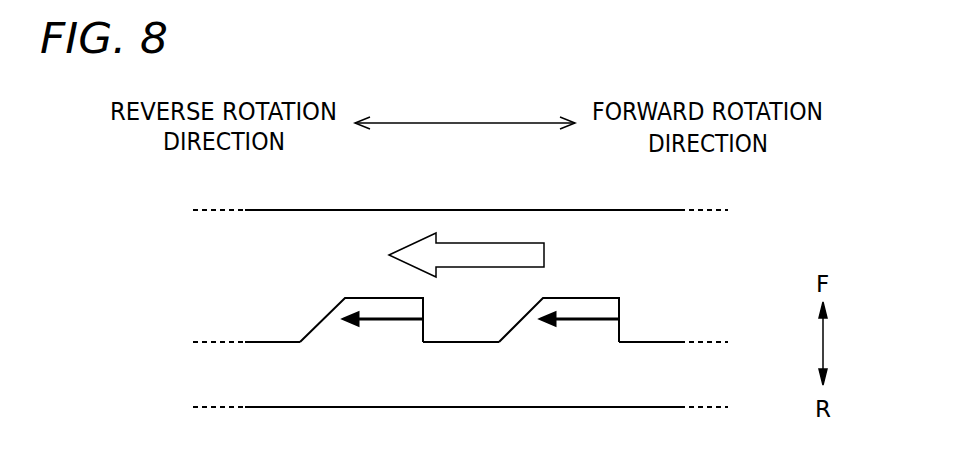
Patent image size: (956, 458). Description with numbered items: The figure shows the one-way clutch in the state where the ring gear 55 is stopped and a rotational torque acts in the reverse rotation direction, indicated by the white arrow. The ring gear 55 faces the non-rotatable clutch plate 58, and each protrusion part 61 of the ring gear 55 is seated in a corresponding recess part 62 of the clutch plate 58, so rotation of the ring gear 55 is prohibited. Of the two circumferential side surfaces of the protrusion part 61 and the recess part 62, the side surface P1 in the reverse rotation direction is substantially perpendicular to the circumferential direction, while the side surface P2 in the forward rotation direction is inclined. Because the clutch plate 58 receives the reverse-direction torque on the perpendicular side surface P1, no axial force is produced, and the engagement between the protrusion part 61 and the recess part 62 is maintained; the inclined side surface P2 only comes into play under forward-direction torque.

The ring gear 55 is at (313, 221).
The clutch plate 58 is at (312, 400).
The protrusion part 61 is at (292, 333).
The recess part 62 is at (263, 337).
The side surface in the reverse rotation direction P1 is at (425, 312).
The side surface in the forward rotation direction P2 is at (340, 303).